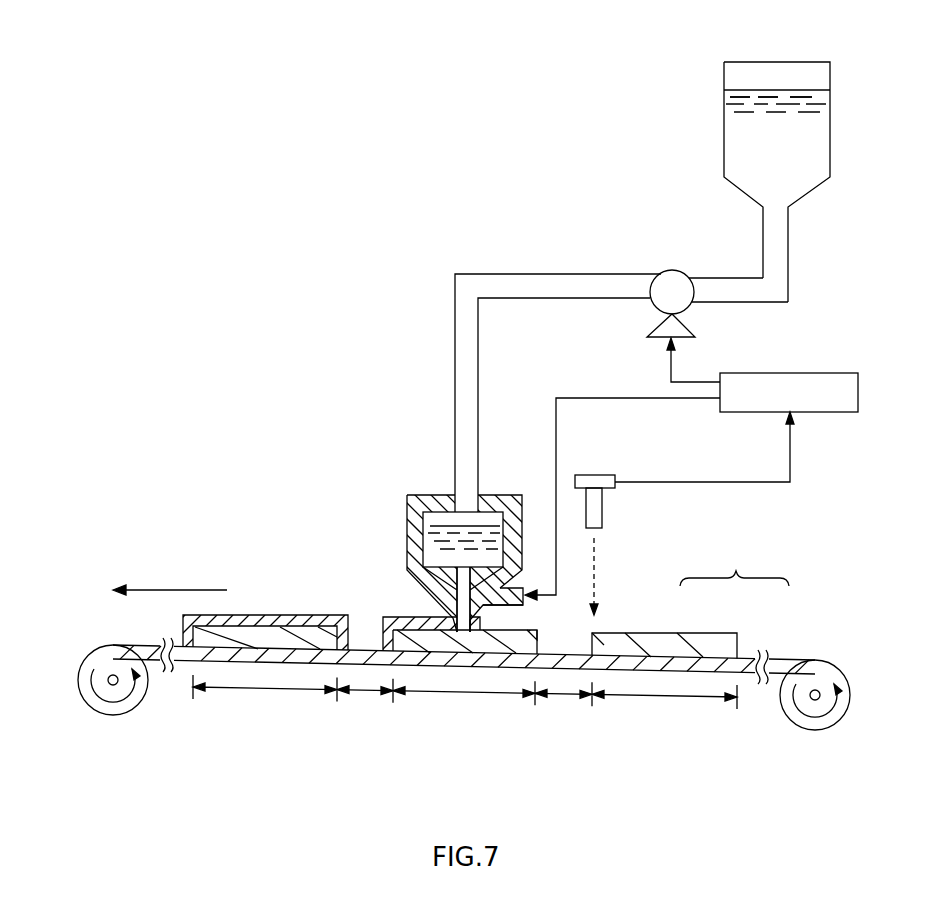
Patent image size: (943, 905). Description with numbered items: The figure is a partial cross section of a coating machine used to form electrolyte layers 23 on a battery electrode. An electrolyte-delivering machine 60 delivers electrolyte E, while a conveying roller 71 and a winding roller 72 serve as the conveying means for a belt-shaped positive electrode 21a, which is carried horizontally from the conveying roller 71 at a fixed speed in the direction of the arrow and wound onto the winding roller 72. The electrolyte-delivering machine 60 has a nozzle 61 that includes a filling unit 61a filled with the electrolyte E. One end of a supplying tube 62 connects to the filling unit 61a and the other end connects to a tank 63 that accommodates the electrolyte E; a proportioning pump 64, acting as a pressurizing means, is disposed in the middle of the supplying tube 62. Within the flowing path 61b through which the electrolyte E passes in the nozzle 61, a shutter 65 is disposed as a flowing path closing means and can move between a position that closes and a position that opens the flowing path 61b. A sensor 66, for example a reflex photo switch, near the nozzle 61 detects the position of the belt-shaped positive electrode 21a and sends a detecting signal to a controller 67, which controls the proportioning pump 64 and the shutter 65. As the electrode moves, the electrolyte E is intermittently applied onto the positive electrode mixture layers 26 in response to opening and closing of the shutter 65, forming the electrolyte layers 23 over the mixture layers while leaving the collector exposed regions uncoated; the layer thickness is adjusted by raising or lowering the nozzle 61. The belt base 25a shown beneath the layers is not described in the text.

The electrolyte-delivering machine 60 is at (407, 298).
The nozzle 61 is at (412, 526).
The filling unit 61a is at (447, 540).
The flowing path 61b is at (452, 592).
The supplying tube 62 is at (592, 272).
The tank 63 is at (806, 62).
The proportioning pump 64 is at (690, 270).
The shutter 65 is at (528, 586).
The sensor 66 is at (607, 474).
The controller 67 is at (832, 373).
The conveying roller 71 is at (822, 666).
The winding roller 72 is at (97, 652).
The belt-shaped positive electrode 21a is at (737, 575).
The electrolyte layer 23 is at (289, 615).
The conveyor belt 25a is at (762, 631).
The positive electrode mixture layer 26 is at (700, 631).
The electrolyte E is at (752, 102).